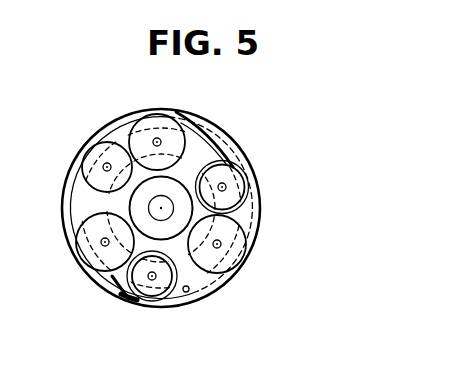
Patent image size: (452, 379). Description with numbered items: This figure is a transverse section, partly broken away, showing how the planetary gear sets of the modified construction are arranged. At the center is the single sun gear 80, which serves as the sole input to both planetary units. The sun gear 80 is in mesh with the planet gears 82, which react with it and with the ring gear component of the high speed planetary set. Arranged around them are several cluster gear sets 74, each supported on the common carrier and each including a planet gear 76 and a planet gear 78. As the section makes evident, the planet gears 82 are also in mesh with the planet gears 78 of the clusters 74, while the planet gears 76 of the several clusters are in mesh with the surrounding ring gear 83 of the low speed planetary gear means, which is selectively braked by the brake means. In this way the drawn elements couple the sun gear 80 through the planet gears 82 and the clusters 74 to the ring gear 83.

The cluster gear sets 74 is at (112, 140).
The planet gear 76 is at (233, 165).
The planet gear 78 is at (85, 157).
The sun gear input 80 is at (130, 199).
The planet gears 82 is at (153, 113).
The ring gear 83 is at (198, 289).